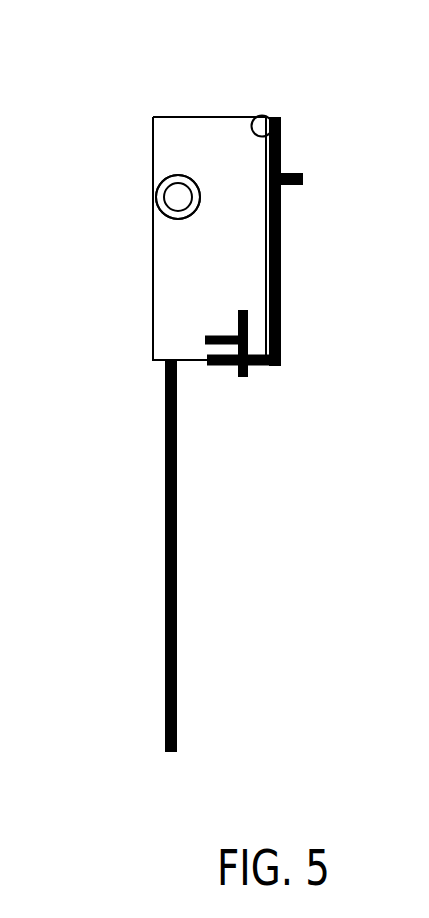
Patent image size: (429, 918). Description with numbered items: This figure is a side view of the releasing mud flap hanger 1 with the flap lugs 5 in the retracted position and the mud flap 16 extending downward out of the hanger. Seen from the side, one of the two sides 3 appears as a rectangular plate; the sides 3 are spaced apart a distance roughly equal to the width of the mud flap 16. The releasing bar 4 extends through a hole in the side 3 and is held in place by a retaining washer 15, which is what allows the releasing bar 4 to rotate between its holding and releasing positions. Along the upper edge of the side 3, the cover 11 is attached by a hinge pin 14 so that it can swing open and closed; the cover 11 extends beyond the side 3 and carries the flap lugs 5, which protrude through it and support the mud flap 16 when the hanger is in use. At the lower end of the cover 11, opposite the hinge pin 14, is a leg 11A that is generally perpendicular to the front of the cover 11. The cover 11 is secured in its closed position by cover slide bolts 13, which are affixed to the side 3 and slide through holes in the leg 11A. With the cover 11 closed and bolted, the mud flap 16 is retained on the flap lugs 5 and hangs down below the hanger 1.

The releasing mud flap hanger 1 is at (212, 138).
The sides 3 is at (152, 288).
The releasing bar 4 is at (176, 196).
The flap lugs 5 is at (303, 180).
The cover 11 is at (281, 345).
The leg 11A is at (218, 367).
The cover slide bolts 13 is at (241, 377).
The hinge pin 14 is at (266, 124).
The retaining washers 15 is at (176, 176).
The mud flap 16 is at (166, 492).